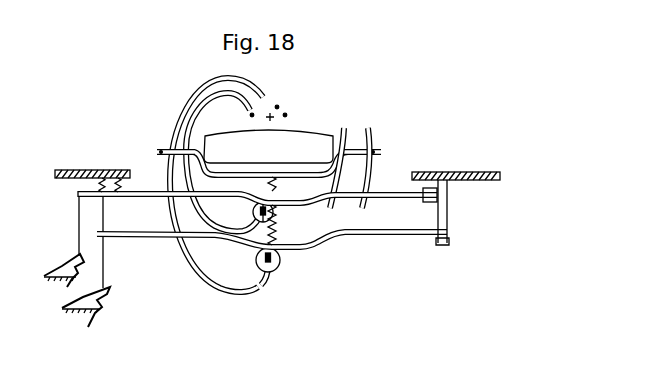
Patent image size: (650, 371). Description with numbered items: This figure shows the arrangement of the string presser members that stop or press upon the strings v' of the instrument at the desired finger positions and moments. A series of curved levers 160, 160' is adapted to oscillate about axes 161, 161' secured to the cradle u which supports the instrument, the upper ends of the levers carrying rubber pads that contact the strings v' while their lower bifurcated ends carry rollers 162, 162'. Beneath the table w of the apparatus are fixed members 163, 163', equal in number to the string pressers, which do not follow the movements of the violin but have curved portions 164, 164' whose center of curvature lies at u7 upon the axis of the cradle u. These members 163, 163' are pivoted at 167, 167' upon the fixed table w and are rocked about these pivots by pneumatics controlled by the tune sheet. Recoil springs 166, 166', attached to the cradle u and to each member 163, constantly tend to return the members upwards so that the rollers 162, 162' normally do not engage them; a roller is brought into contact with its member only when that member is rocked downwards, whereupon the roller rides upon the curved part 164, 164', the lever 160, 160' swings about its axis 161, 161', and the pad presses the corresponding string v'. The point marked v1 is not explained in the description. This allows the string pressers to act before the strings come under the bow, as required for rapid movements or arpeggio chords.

The curved lever 160 is at (195, 176).
The curved lever 160' is at (195, 162).
The axis 161 is at (244, 145).
The axis 161' is at (223, 143).
The roller 162 is at (315, 282).
The roller 162' is at (199, 256).
The fixed member 163 is at (272, 251).
The fixed member 163' is at (257, 239).
The curved portion 164 is at (227, 261).
The curved portion 164' is at (339, 233).
The recoil spring 166 is at (322, 234).
The recoil spring 166' is at (165, 170).
The pivot 167 is at (466, 212).
The pivot 167' is at (458, 196).
The cradle u is at (294, 177).
The axis of the cradle u7 is at (253, 120).
The strings v' is at (268, 146).
The valve pins v1 is at (274, 113).
The table w is at (472, 171).